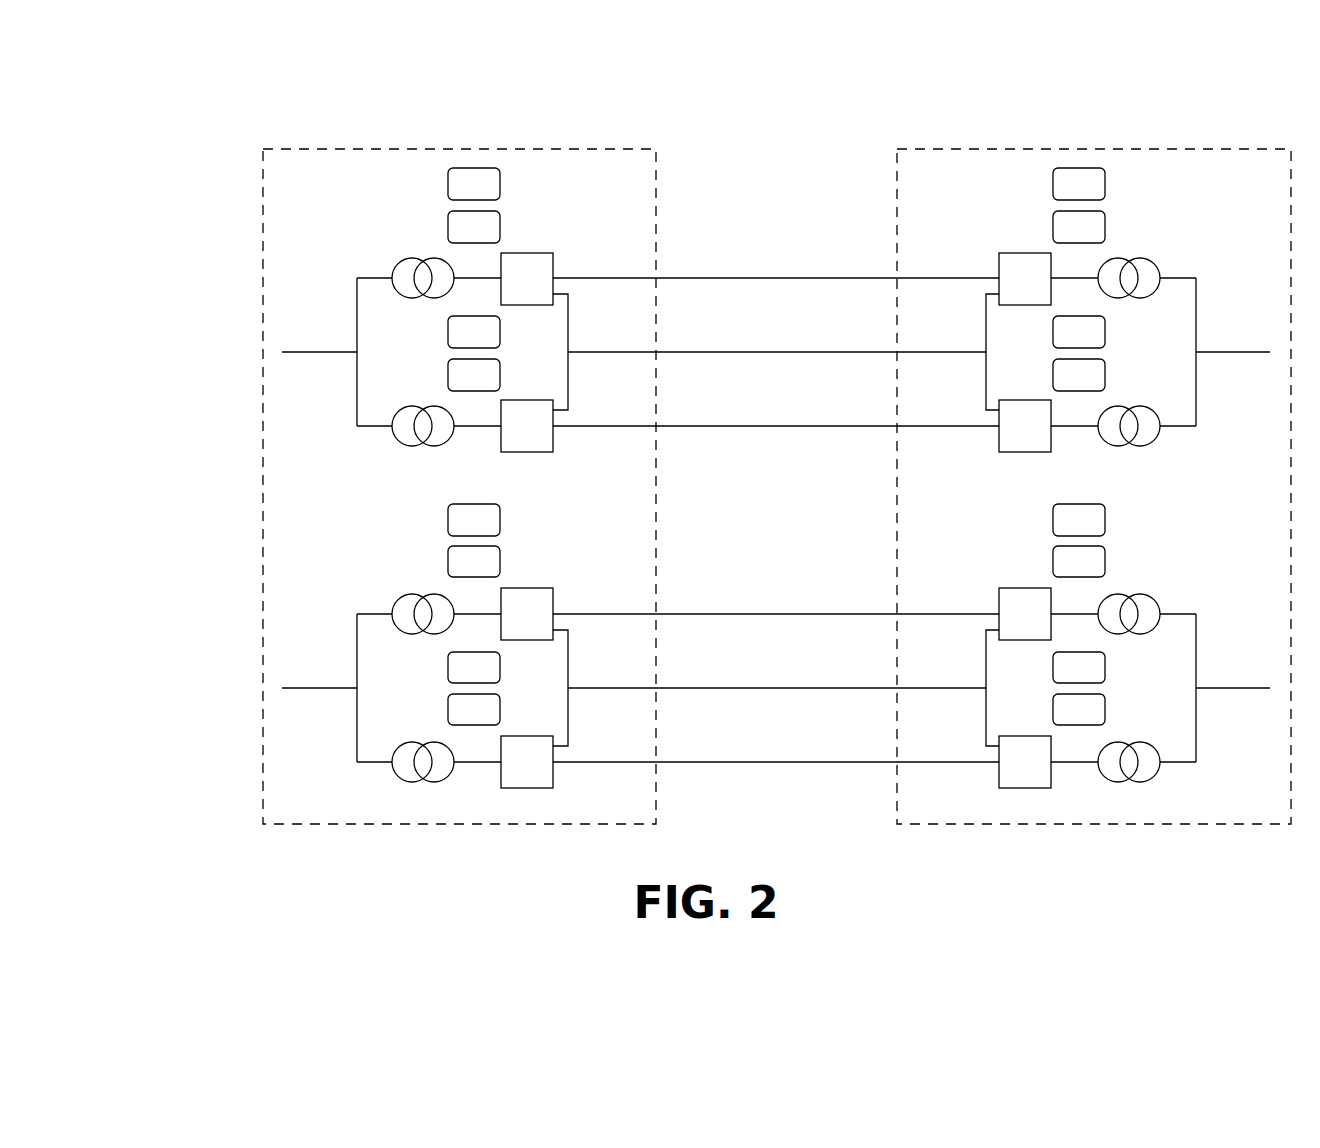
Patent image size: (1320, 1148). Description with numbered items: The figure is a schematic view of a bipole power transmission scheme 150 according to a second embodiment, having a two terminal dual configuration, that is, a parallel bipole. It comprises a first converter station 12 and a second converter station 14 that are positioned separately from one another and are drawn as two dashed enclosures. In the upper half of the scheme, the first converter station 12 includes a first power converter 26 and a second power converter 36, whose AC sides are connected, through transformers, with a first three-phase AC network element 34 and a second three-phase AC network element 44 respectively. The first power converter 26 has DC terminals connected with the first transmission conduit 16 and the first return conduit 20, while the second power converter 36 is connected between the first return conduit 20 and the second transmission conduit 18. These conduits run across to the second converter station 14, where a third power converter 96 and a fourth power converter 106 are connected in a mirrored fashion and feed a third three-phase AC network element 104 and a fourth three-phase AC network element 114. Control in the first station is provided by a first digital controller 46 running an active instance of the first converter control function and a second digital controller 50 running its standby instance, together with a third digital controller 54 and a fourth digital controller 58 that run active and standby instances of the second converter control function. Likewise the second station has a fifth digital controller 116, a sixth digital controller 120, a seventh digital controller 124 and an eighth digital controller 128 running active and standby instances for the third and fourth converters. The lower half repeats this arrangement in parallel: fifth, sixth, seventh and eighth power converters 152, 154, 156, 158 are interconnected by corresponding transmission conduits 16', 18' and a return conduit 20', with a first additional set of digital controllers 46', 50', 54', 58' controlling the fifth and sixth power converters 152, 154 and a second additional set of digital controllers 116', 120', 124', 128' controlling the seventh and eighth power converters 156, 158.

The bipole power transmission scheme 150 is at (200, 133).
The first converter station 12 is at (383, 148).
The second converter station 14 is at (1188, 148).
The first transmission conduit 16 is at (776, 247).
The second transmission conduit 18 is at (776, 395).
The first return conduit 20 is at (777, 321).
The first power converter 26 is at (527, 279).
The second power converter 36 is at (527, 426).
The first three-phase AC network element 34 is at (320, 350).
The second three-phase AC network element 44 is at (320, 686).
The first digital controller 46 is at (474, 184).
The second digital controller 50 is at (474, 227).
The third digital controller 54 is at (474, 332).
The fourth digital controller 58 is at (474, 375).
The third power converter 96 is at (1025, 279).
The fourth power converter 106 is at (1025, 426).
The third three-phase AC network element 104 is at (1232, 350).
The fourth three-phase AC network element 114 is at (1232, 686).
The fifth digital controller 116 is at (1079, 184).
The sixth digital controller 120 is at (1079, 227).
The seventh digital controller 124 is at (1079, 332).
The eighth digital controller 128 is at (1079, 375).
The fifth power converter 152 is at (527, 614).
The sixth power converter 154 is at (527, 762).
The seventh power converter 156 is at (1025, 614).
The eighth power converter 158 is at (1025, 762).
The transmission conduit 16' is at (776, 582).
The transmission conduit 18' is at (776, 731).
The return conduit 20' is at (777, 657).
The digital controller 46' is at (509, 519).
The digital controller 50' is at (509, 560).
The digital controller 54' is at (509, 667).
The digital controller 58' is at (509, 709).
The digital controller 116' is at (1122, 519).
The digital controller 120' is at (1122, 560).
The digital controller 124' is at (1122, 667).
The digital controller 128' is at (1122, 709).